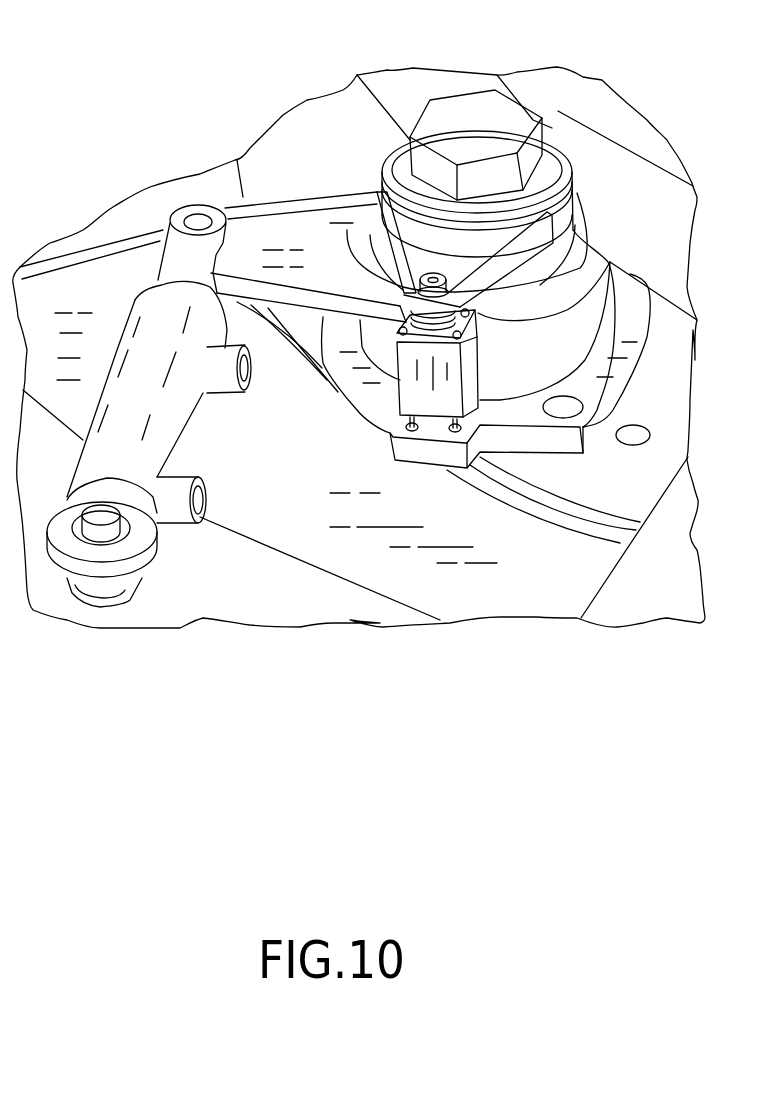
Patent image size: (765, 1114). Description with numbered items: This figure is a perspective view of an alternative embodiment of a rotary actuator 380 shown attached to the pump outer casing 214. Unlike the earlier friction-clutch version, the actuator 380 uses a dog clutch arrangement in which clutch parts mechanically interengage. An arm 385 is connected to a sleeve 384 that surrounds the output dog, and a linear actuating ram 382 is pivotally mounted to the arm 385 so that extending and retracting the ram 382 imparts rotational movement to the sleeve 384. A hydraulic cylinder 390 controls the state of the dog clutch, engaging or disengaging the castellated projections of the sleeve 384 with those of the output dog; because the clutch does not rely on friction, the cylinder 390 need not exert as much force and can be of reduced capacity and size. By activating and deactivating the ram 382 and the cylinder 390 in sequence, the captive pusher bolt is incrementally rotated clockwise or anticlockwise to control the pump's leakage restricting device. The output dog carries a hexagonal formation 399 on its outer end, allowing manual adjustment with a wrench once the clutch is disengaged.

The pump outer casing 214 is at (550, 590).
The actuator 380 is at (561, 113).
The linear actuating ram 382 is at (160, 443).
The sleeve 384 is at (597, 257).
The arm 385 is at (310, 227).
The hydraulic cylinder 390 is at (470, 363).
The hexagonal formation 399 is at (467, 100).